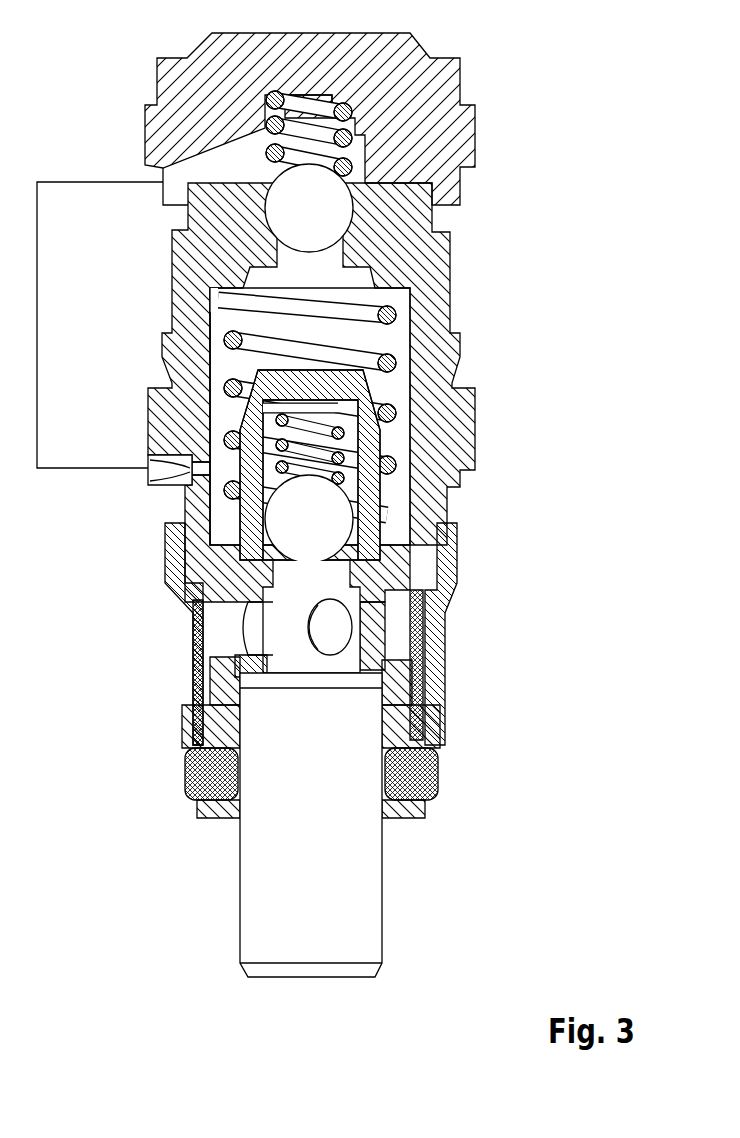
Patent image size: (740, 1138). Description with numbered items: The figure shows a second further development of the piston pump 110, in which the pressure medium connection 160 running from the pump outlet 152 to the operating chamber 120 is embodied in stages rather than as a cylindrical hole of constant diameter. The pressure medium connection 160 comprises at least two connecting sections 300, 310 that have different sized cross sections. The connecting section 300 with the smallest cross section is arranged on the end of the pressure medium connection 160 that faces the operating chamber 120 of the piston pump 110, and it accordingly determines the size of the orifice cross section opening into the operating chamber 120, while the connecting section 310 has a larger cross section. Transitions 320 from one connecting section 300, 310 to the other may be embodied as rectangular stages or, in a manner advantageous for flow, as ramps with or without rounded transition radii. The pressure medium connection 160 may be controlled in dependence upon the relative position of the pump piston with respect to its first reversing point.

The piston pump 110 is at (593, 67).
The operating chamber 120 is at (402, 328).
The pump outlet 152 is at (177, 188).
The pressure medium connection 160 is at (62, 182).
The connecting section 300 is at (163, 465).
The connecting section 310 is at (158, 477).
The transition 320 is at (180, 492).